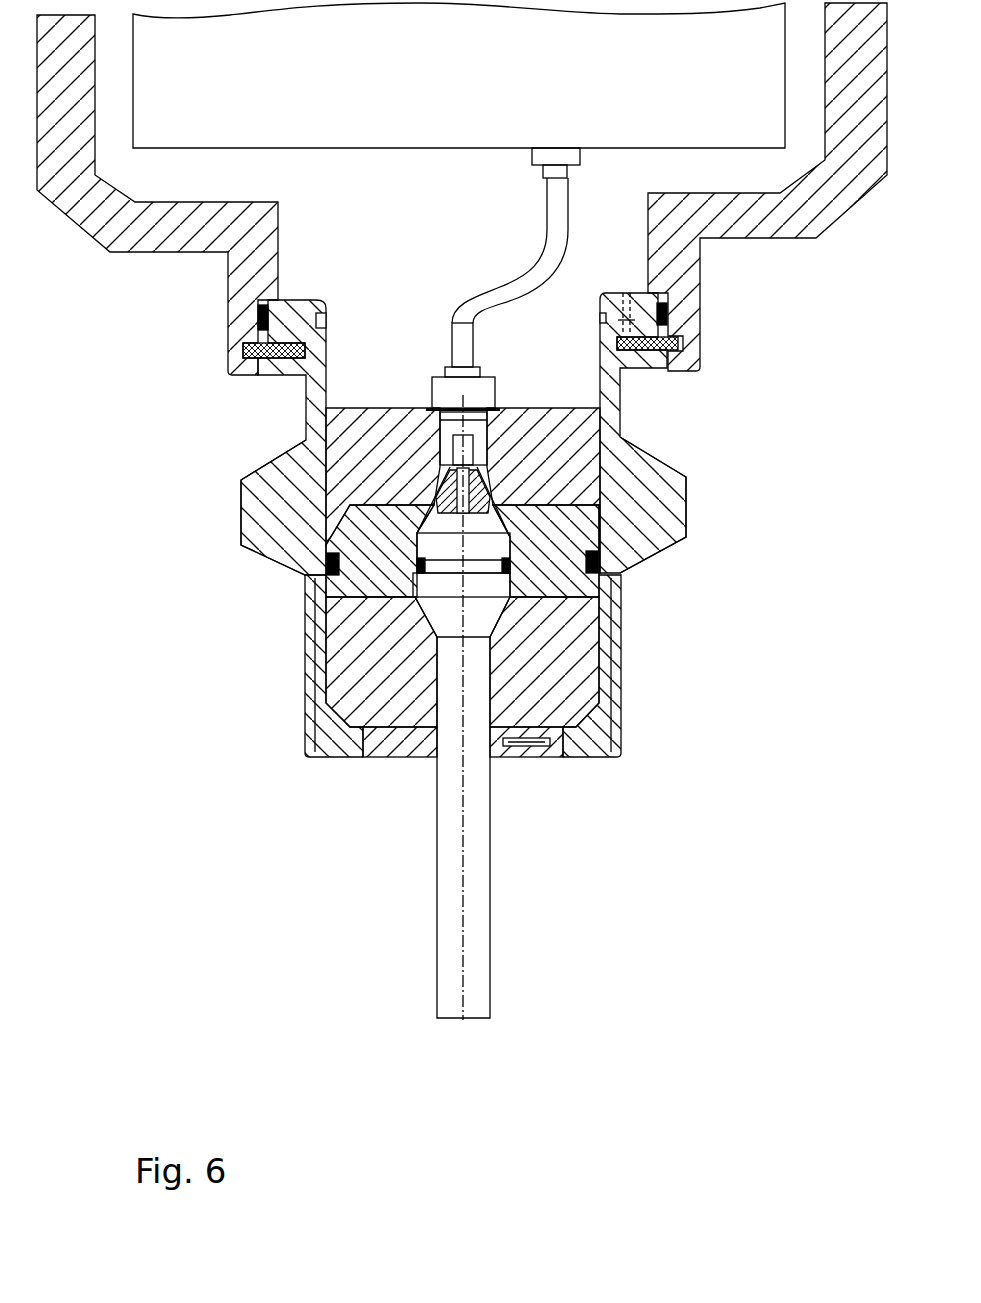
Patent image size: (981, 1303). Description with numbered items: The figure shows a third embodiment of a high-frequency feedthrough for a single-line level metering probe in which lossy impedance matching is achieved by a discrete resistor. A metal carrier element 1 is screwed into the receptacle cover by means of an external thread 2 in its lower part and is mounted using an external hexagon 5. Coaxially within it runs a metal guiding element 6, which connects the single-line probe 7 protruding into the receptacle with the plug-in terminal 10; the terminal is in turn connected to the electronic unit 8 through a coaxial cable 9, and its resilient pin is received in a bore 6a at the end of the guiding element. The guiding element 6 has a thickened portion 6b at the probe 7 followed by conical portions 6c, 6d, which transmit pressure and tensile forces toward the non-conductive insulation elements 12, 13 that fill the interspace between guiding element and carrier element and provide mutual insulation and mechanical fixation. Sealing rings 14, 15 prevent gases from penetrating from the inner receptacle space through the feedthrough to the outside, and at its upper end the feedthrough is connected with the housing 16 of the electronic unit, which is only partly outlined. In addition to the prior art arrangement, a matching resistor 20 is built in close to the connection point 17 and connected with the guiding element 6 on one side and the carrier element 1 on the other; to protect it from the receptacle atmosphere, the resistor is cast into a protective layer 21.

The carrier element 1 is at (242, 488).
The external thread 2 is at (305, 658).
The external hexagon 5 is at (240, 521).
The guiding element 6 is at (480, 677).
The bore 6a is at (530, 478).
The thickened portion 6b is at (515, 540).
The conical portion 6c is at (490, 612).
The conical portion 6d is at (485, 520).
The single-line probe 7 is at (478, 942).
The electronic unit 8 is at (459, 90).
The coaxial cable 9 is at (493, 283).
The plug-in terminal 10 is at (428, 378).
The insulation element 12 is at (345, 542).
The insulation element 13 is at (370, 708).
The sealing ring 14 is at (512, 565).
The sealing ring 15 is at (600, 575).
The housing 16 is at (765, 245).
The connection point 17 is at (497, 757).
The matching resistor 20 is at (566, 757).
The protective layer 21 is at (390, 757).